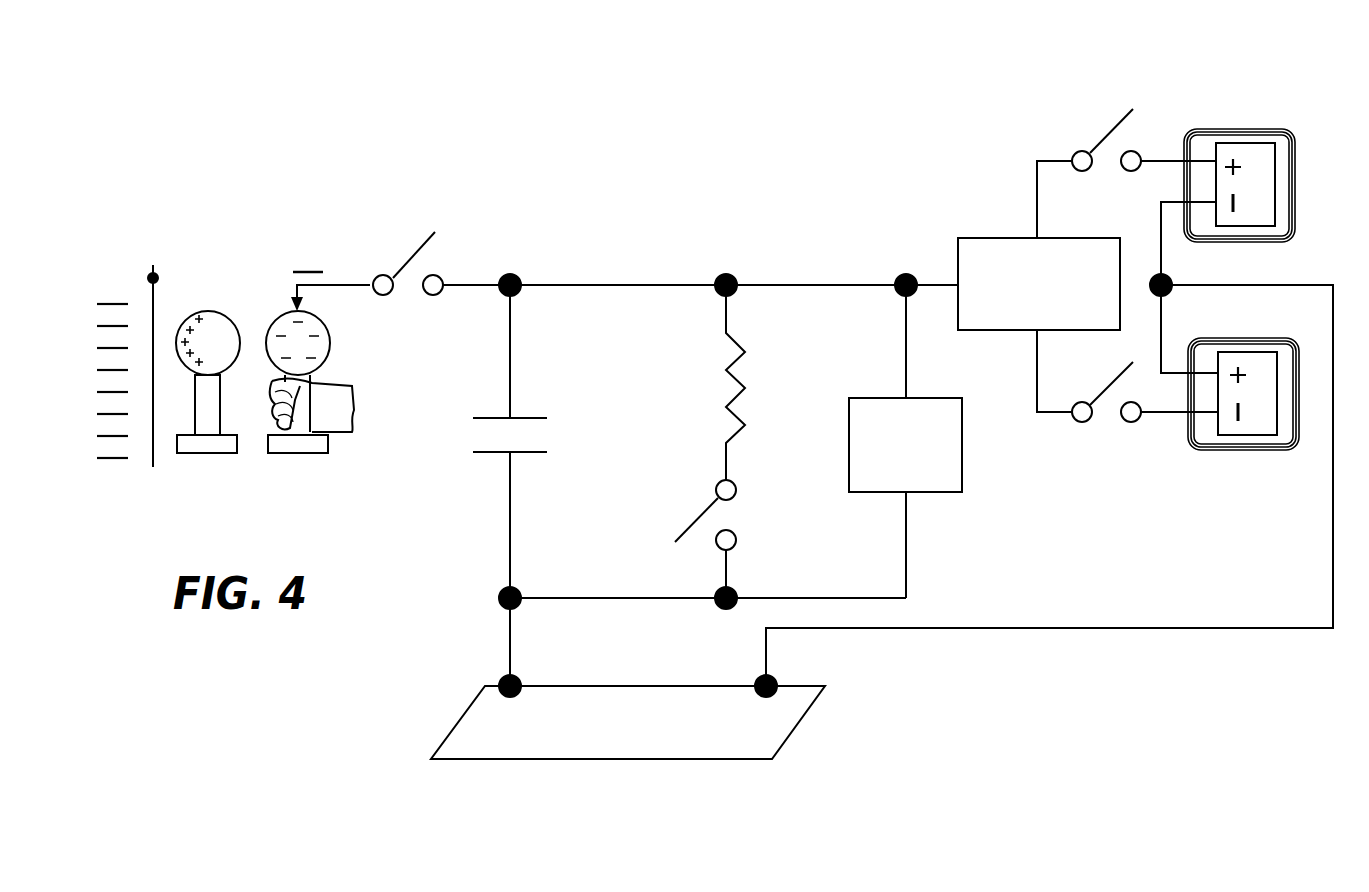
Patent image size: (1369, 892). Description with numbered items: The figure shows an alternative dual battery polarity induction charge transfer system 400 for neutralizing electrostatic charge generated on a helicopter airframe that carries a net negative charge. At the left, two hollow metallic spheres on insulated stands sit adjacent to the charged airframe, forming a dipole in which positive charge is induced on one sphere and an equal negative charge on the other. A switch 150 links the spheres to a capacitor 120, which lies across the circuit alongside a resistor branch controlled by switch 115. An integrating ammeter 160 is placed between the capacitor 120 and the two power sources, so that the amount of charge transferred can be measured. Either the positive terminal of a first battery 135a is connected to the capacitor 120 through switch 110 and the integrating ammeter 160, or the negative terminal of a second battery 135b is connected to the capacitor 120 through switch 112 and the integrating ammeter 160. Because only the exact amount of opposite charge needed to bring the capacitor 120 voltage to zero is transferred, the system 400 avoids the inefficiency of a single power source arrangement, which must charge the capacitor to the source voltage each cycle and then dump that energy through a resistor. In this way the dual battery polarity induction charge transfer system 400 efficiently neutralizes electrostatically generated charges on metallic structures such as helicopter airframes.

The dual battery polarity induction charge transfer system 400 is at (161, 230).
The switch 150 is at (418, 250).
The capacitor 120 is at (473, 452).
The switch 115 is at (689, 528).
The integrating ammeter 160 is at (988, 238).
The switch 110 is at (1108, 135).
The second battery switch 112 is at (1082, 422).
The first battery 135a is at (1253, 129).
The second battery 135b is at (1245, 450).